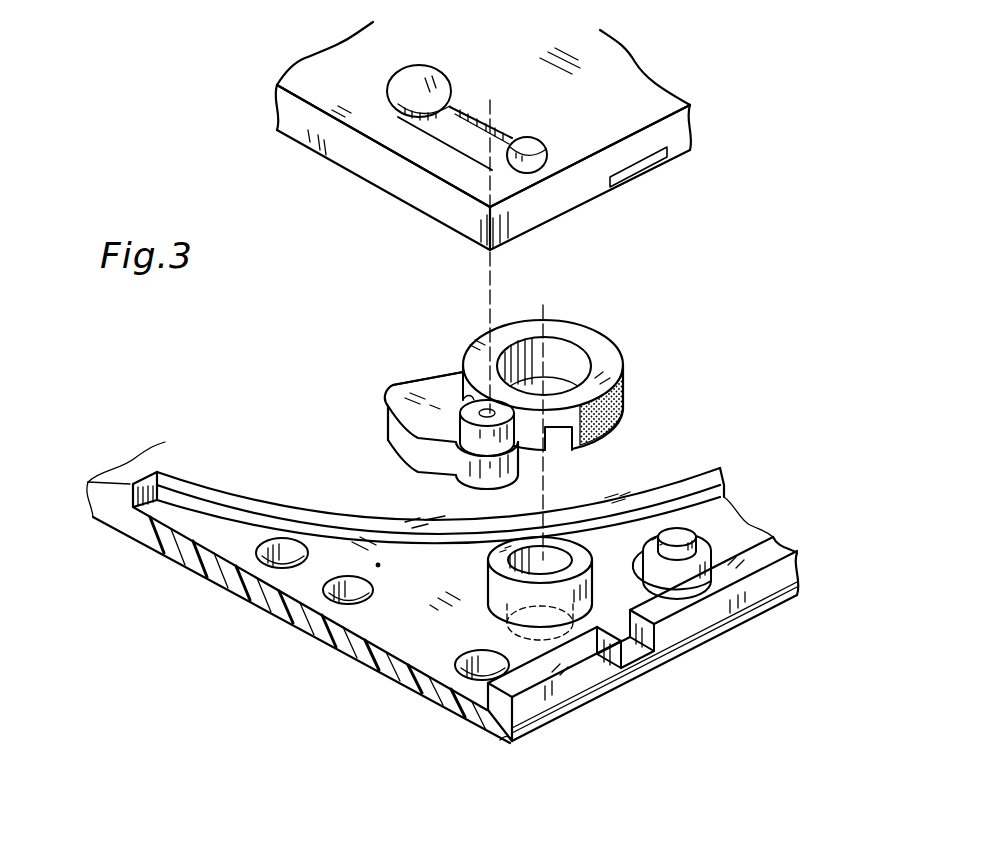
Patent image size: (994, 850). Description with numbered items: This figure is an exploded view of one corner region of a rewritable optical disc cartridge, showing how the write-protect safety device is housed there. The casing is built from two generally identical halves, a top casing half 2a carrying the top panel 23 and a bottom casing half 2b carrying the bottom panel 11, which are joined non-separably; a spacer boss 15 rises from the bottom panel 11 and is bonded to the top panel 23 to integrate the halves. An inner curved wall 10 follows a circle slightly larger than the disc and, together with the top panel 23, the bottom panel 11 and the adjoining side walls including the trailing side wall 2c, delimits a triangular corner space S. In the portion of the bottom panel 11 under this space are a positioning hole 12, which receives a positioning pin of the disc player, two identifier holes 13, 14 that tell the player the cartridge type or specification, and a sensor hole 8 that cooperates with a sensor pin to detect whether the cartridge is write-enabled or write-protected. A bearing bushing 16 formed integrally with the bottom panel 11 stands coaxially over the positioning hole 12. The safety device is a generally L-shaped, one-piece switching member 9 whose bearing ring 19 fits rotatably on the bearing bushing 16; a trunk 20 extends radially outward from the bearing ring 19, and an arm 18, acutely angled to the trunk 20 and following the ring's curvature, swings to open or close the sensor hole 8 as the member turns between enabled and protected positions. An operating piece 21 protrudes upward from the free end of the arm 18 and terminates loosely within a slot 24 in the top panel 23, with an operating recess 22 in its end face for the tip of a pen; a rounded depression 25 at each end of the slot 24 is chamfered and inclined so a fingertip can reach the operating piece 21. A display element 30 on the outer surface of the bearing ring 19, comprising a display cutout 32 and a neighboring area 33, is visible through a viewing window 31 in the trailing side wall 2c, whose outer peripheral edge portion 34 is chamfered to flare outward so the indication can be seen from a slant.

The top casing half 2a is at (350, 160).
The bottom casing half 2b is at (573, 693).
The trailing side wall 2c is at (757, 597).
The sensor hole 8 is at (457, 673).
The switching member 9 is at (588, 383).
The inner curved wall 10 is at (233, 497).
The bottom panel 11 is at (353, 658).
The positioning hole 12 is at (540, 630).
The identifier hole 13 is at (323, 597).
The identifier hole 14 is at (257, 557).
The spacer boss 15 is at (677, 530).
The bearing bushing 16 is at (583, 597).
The arm 18 is at (425, 409).
The bearing ring 19 is at (613, 397).
The trunk 20 is at (457, 370).
The operating piece 21 is at (423, 398).
The operating recess 22 is at (470, 407).
The top panel 23 is at (657, 98).
The slot 24 is at (468, 123).
The rounded depression 25 is at (413, 70).
The display element 30 is at (618, 431).
The viewing window 31 is at (627, 643).
The display cutout 32 is at (572, 443).
The area 33 is at (598, 438).
The outer peripheral edge portion 34 is at (647, 167).
The triangular corner space S is at (378, 565).